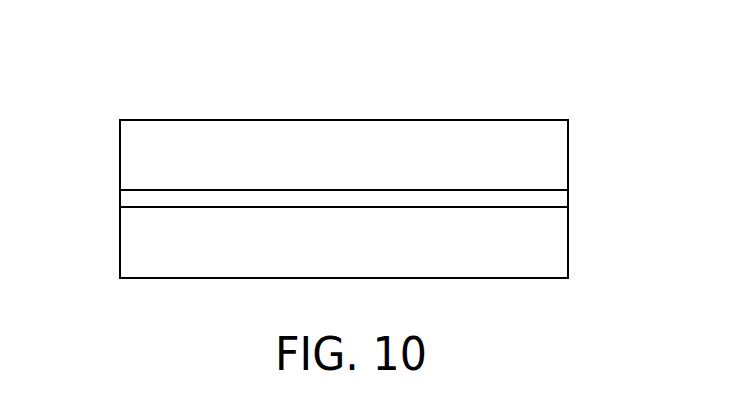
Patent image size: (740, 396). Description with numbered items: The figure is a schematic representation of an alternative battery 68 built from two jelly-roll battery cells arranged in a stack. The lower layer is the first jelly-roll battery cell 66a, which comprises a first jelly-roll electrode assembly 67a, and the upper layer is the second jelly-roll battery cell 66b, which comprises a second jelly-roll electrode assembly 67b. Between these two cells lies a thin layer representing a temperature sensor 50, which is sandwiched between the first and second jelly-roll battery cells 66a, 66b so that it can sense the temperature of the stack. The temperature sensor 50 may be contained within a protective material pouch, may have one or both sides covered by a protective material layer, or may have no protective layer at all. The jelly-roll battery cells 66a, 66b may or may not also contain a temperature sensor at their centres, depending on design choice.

The alternative battery 68 is at (355, 92).
The temperature sensor 50 is at (122, 198).
The first jelly-roll battery cell 66a is at (558, 253).
The second jelly-roll battery cell 66b is at (557, 153).
The first jelly-roll electrode assembly 67a is at (138, 279).
The second jelly-roll electrode assembly 67b is at (138, 119).